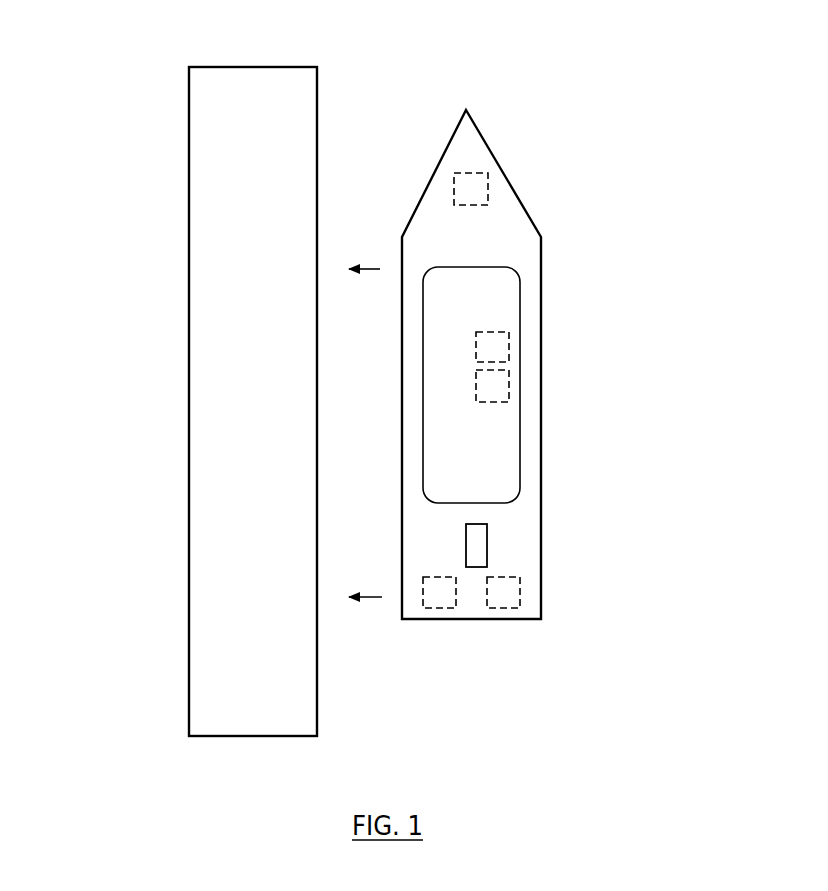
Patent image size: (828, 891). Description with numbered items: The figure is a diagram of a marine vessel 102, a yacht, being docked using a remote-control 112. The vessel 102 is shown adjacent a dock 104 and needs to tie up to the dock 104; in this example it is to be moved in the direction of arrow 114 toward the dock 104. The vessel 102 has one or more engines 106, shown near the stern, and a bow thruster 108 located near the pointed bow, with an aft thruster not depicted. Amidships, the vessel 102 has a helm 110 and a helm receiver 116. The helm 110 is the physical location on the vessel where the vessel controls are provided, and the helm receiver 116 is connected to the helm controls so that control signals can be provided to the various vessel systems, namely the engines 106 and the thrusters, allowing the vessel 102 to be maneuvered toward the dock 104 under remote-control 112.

The marine vessel 102 is at (551, 232).
The dock 104 is at (172, 205).
The engines 106 is at (502, 612).
The bow thruster 108 is at (480, 178).
The helm 110 is at (509, 353).
The remote-control 112 is at (488, 547).
The arrow 114 is at (362, 269).
The helm receiver 116 is at (509, 393).